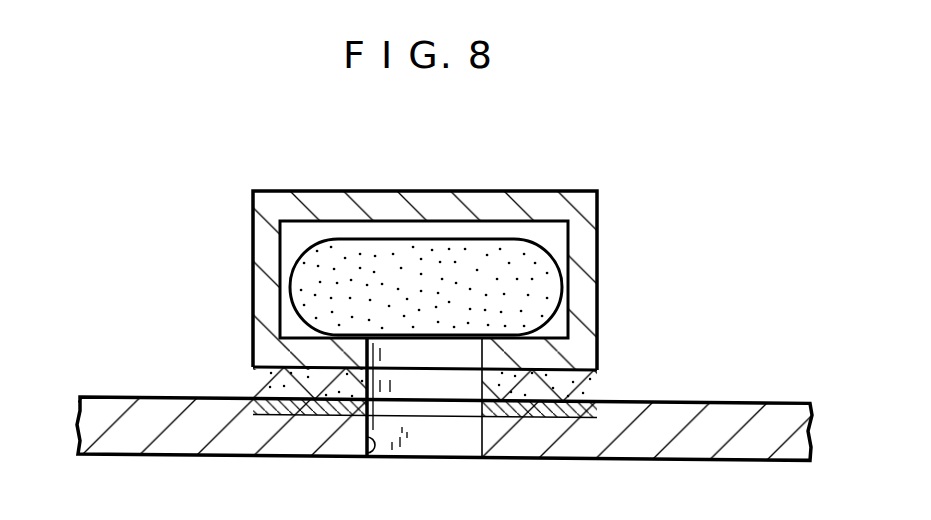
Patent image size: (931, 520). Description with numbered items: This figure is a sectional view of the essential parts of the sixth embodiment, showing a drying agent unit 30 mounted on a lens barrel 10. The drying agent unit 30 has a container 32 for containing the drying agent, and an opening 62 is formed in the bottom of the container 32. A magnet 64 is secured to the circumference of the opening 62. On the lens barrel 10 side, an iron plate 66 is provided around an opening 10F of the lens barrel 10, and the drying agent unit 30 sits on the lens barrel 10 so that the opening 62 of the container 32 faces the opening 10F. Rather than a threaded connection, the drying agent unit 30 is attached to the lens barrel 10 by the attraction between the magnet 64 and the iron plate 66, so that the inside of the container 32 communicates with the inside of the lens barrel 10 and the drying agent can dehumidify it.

The lens barrel 10 is at (107, 403).
The opening 10F is at (369, 446).
The drying agent unit 30 is at (585, 188).
The container 32 is at (592, 297).
The opening 62 is at (478, 345).
The magnet 64 is at (585, 385).
The iron plate 66 is at (593, 416).